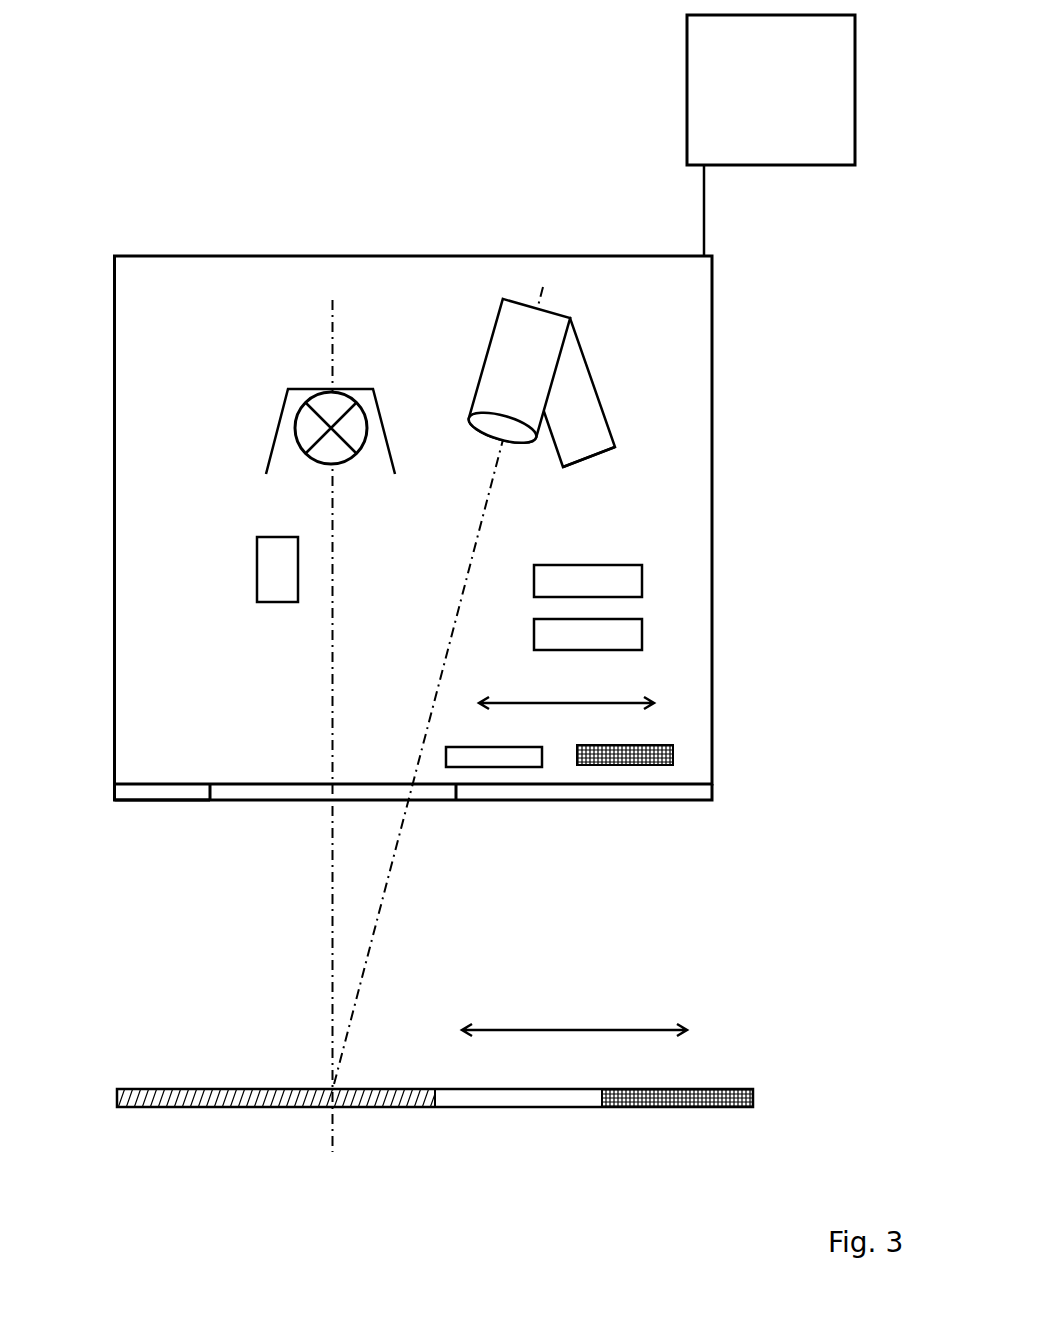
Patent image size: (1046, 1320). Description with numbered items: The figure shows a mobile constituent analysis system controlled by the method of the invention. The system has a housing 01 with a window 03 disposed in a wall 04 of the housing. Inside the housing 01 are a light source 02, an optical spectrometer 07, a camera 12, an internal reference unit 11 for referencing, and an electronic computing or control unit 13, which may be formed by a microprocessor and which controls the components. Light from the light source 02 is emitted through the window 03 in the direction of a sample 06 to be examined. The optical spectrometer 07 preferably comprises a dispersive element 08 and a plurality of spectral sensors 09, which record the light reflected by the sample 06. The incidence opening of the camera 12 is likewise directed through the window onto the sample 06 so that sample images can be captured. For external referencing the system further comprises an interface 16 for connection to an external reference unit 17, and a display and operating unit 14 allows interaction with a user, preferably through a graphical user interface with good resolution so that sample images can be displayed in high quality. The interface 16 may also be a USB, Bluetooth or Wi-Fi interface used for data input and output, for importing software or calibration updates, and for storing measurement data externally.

The housing 01 is at (114, 328).
The light source 02 is at (298, 413).
The window 03 is at (270, 795).
The wall 04 is at (153, 795).
The sample 06 is at (150, 1107).
The optical spectrometer 07 is at (552, 393).
The dispersive element 08 is at (552, 314).
The spectral sensors 09 is at (598, 449).
The internal reference unit 11 is at (530, 760).
The camera 12 is at (280, 577).
The control unit 13 is at (630, 573).
The display and operating unit 14 is at (833, 158).
The interface 16 is at (630, 632).
The external reference unit 17 is at (663, 1107).